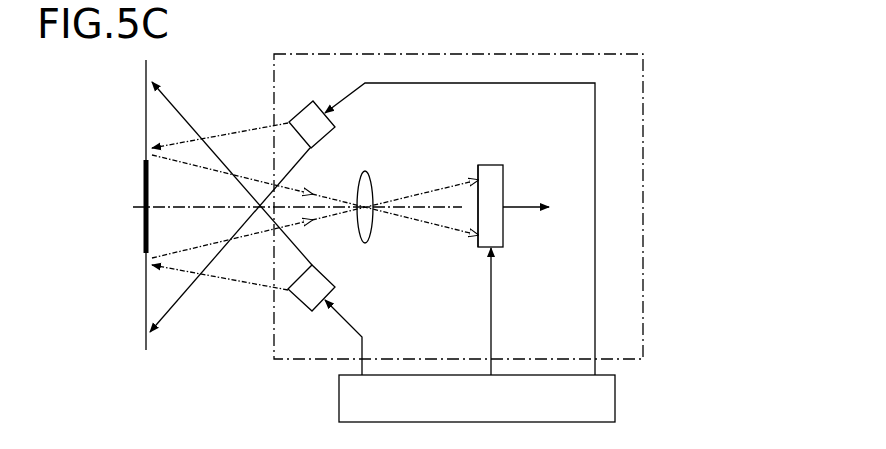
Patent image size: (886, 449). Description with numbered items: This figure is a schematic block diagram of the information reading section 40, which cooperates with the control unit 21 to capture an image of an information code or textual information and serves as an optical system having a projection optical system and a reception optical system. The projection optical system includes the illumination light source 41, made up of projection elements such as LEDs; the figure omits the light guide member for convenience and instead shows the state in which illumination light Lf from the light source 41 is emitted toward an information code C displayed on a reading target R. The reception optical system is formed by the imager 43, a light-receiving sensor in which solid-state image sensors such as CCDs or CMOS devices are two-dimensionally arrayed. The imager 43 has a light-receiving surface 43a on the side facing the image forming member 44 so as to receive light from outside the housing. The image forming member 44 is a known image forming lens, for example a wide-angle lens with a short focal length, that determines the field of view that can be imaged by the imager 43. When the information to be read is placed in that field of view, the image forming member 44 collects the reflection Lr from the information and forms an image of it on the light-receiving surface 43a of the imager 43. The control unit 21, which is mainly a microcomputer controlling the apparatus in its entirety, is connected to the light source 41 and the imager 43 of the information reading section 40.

The reading target R is at (148, 73).
The information code C is at (148, 201).
The illumination light Lf is at (218, 136).
The reflection Lr is at (413, 191).
The information reading section 40 is at (644, 109).
The illumination light source 41 is at (301, 112).
The imager 43 is at (491, 165).
The light-receiving surface 43a is at (478, 198).
The image forming member 44 is at (365, 244).
The control unit 21 is at (616, 400).